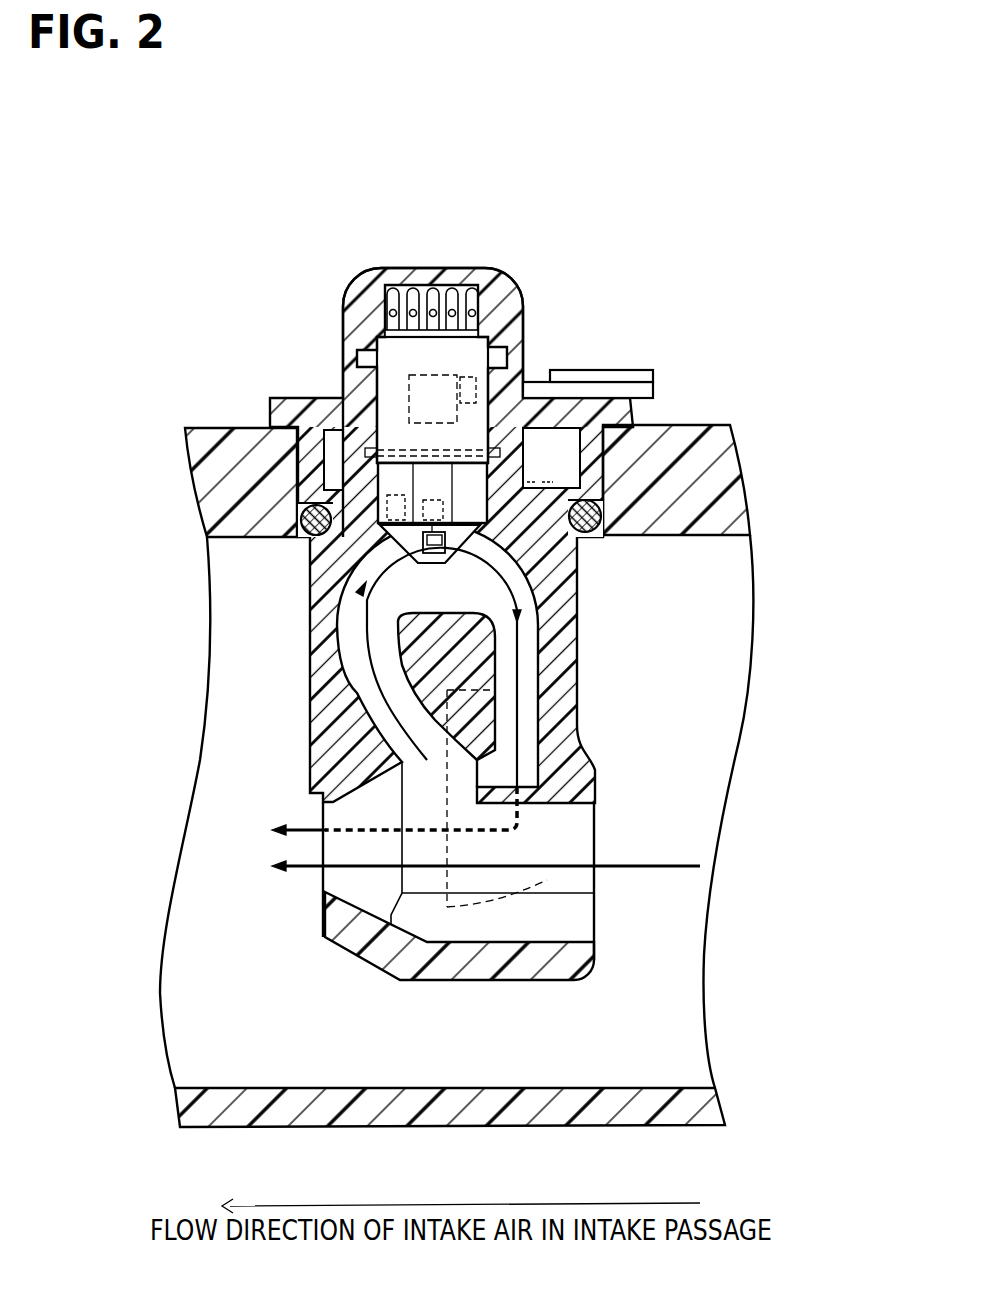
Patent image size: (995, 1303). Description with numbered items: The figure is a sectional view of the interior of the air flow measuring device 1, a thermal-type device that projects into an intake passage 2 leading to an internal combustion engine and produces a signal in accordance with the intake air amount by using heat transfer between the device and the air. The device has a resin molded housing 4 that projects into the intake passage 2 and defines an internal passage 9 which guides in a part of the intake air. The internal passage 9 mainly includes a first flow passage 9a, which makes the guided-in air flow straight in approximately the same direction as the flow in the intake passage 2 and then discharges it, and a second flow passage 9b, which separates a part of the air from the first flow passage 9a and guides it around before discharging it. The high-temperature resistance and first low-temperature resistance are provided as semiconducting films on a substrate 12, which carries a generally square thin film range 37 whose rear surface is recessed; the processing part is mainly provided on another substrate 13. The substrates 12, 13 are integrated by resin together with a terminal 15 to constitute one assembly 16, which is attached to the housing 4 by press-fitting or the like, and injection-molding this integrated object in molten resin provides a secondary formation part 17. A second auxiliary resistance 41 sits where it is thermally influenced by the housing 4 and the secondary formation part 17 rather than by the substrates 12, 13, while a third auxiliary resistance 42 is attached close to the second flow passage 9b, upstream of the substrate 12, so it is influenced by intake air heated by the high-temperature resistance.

The air flow measuring device 1 is at (632, 196).
The intake passage 2 is at (195, 1027).
The housing 4 is at (303, 625).
The internal passage 9 is at (566, 764).
The first flow passage 9a is at (568, 840).
The second flow passage 9b is at (523, 610).
The substrate 12 is at (431, 530).
The substrate 13 is at (456, 370).
The terminal 15 is at (468, 300).
The assembly 16 is at (377, 334).
The secondary formation part 17 is at (505, 292).
The thin film range 37 is at (452, 505).
The second auxiliary resistance 41 is at (474, 382).
The third auxiliary resistance 42 is at (362, 514).